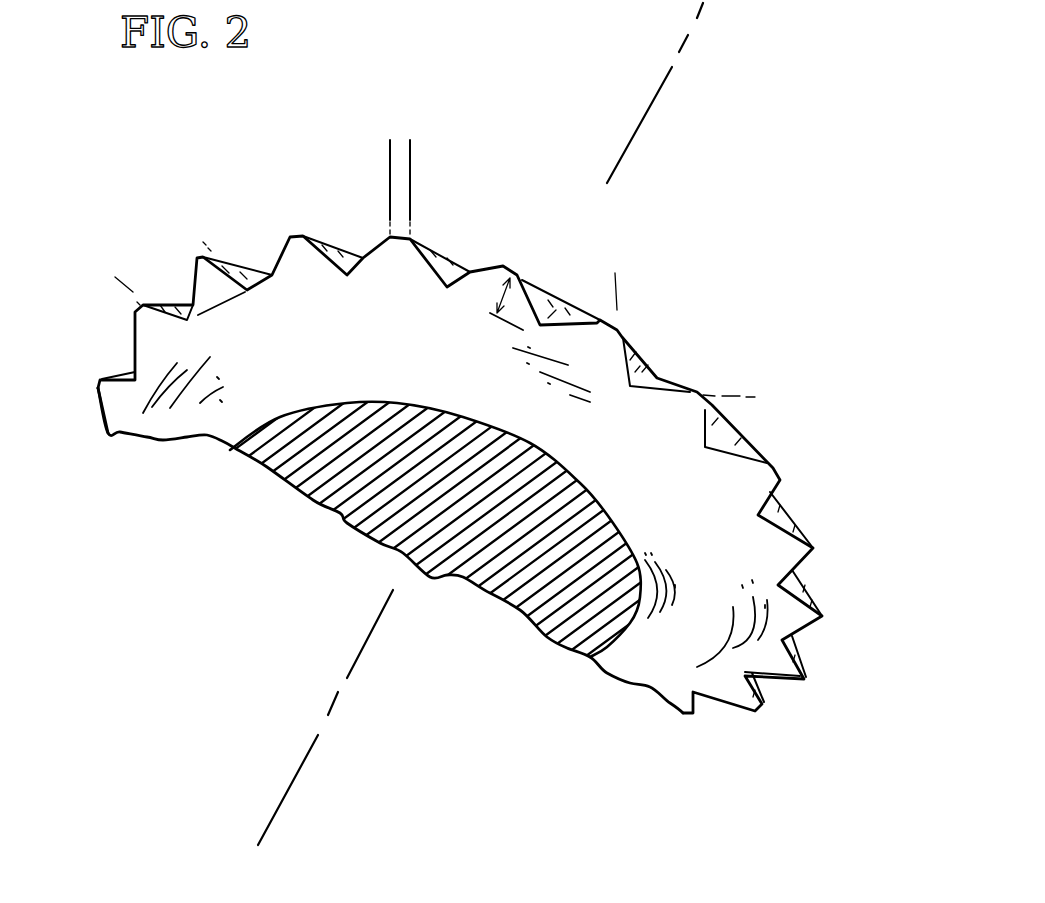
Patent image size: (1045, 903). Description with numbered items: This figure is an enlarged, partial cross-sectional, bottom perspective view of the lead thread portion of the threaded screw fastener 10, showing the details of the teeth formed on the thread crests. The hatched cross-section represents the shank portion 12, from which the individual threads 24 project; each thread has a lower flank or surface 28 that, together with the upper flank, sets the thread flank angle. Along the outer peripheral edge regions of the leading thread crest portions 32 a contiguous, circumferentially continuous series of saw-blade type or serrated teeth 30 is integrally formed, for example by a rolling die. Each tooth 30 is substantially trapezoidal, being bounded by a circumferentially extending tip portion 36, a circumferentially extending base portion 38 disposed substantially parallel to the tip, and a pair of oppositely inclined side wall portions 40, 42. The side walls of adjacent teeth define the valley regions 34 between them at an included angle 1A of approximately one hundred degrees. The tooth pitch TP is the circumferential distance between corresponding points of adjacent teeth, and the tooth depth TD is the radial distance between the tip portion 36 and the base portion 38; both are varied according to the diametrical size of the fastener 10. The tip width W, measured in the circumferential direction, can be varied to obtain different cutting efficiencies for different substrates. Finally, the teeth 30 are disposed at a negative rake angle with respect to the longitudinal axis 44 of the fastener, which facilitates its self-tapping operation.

The threaded screw fastener 10 is at (620, 237).
The shank portion 12 is at (337, 517).
The individual threads 24 is at (98, 397).
The lower flank or surface 28 is at (192, 415).
The saw-blade type or serrated teeth 30 is at (250, 252).
The leading thread crest portions 32 is at (521, 265).
The valley regions 34 is at (358, 255).
The tip portion 36 is at (198, 257).
The base portion 38 is at (227, 303).
The side wall portion 40 is at (183, 287).
The side wall portion 42 is at (265, 260).
The longitudinal axis 44 is at (363, 647).
The tip width or arcuate extent W is at (363, 153).
The tooth pitch TP is at (238, 210).
The tooth depth dimension TD is at (503, 293).
The included angle 1A is at (721, 381).